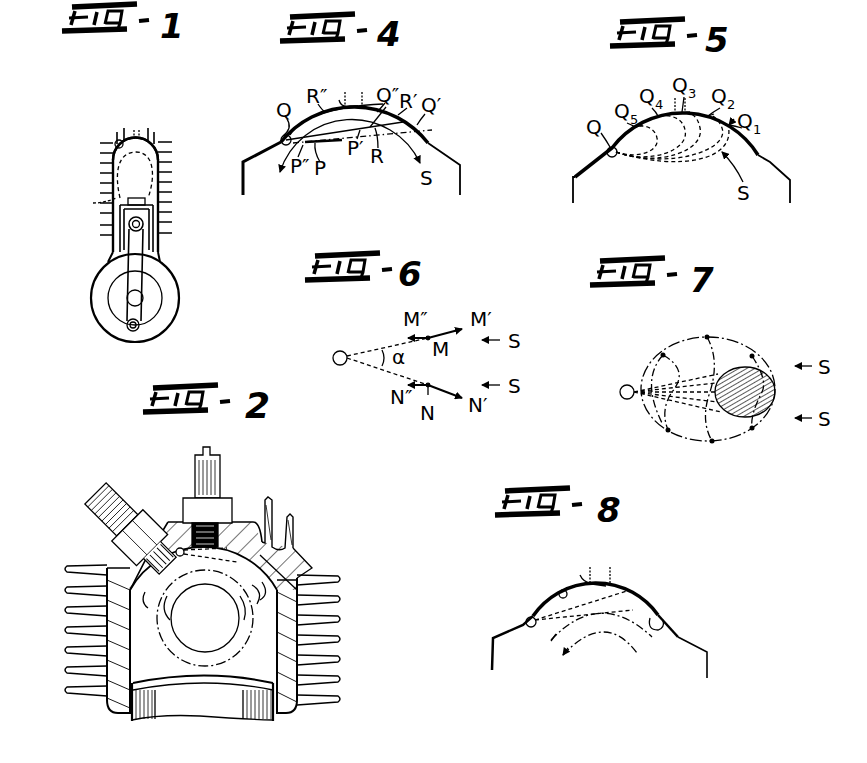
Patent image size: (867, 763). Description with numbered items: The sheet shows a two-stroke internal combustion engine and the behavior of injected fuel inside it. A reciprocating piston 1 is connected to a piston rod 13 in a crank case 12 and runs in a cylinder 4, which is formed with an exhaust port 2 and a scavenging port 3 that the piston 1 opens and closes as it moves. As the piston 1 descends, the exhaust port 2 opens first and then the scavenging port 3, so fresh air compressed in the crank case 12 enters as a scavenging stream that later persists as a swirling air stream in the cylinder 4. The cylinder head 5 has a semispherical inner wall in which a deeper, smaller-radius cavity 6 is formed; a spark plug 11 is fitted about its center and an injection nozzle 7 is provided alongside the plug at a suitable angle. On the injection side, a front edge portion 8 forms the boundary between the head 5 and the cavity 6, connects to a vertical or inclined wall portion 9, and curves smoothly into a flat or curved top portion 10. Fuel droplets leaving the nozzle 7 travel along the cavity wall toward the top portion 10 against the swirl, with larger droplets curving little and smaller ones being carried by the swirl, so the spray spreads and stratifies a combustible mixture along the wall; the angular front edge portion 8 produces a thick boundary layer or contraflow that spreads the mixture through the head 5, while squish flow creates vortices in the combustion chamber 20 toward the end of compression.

In FIG. 1, the reciprocating piston 1 is at (158, 240).
In FIG. 1, the exhaust port 2 is at (104, 200).
In FIG. 1, the scavenging port 3 is at (146, 203).
In FIG. 1, the cylinder 4 is at (170, 181).
In FIG. 4, the cylinder 4 is at (460, 186).
In FIG. 5, the cylinder 4 is at (572, 190).
In FIG. 2, the cylinder 4 is at (282, 650).
In FIG. 8, the cylinder 4 is at (707, 672).
In FIG. 1, the cylinder head 5 is at (158, 140).
In FIG. 4, the cylinder head 5 is at (448, 158).
In FIG. 2, the cylinder head 5 is at (112, 567).
In FIG. 8, the cylinder head 5 is at (512, 632).
In FIG. 2, the cavity 6 is at (299, 578).
In FIG. 8, the cavity 6 is at (587, 583).
In FIG. 1, the injection nozzle 7 is at (118, 140).
In FIG. 4, the injection nozzle 7 is at (280, 136).
In FIG. 5, the injection nozzle 7 is at (610, 158).
In FIG. 6, the injection nozzle 7 is at (336, 351).
In FIG. 7, the injection nozzle 7 is at (624, 385).
In FIG. 2, the injection nozzle 7 is at (95, 518).
In FIG. 8, the injection nozzle 7 is at (530, 627).
In FIG. 4, the front edge portion 8 is at (432, 142).
In FIG. 2, the front edge portion 8 is at (268, 588).
In FIG. 8, the front edge portion 8 is at (681, 633).
In FIG. 2, the wall portion 9 is at (262, 552).
In FIG. 8, the wall portion 9 is at (667, 637).
In FIG. 2, the top portion 10 is at (178, 547).
In FIG. 8, the top portion 10 is at (561, 590).
In FIG. 1, the spark plug 11 is at (136, 128).
In FIG. 4, the spark plug 11 is at (346, 98).
In FIG. 5, the spark plug 11 is at (680, 106).
In FIG. 2, the spark plug 11 is at (220, 478).
In FIG. 8, the spark plug 11 is at (612, 575).
In FIG. 1, the crank case 12 is at (170, 298).
In FIG. 1, the piston rod 13 is at (136, 276).
In FIG. 1, the combustion chamber 20 is at (124, 163).
In FIG. 2, the combustion chamber 20 is at (268, 625).